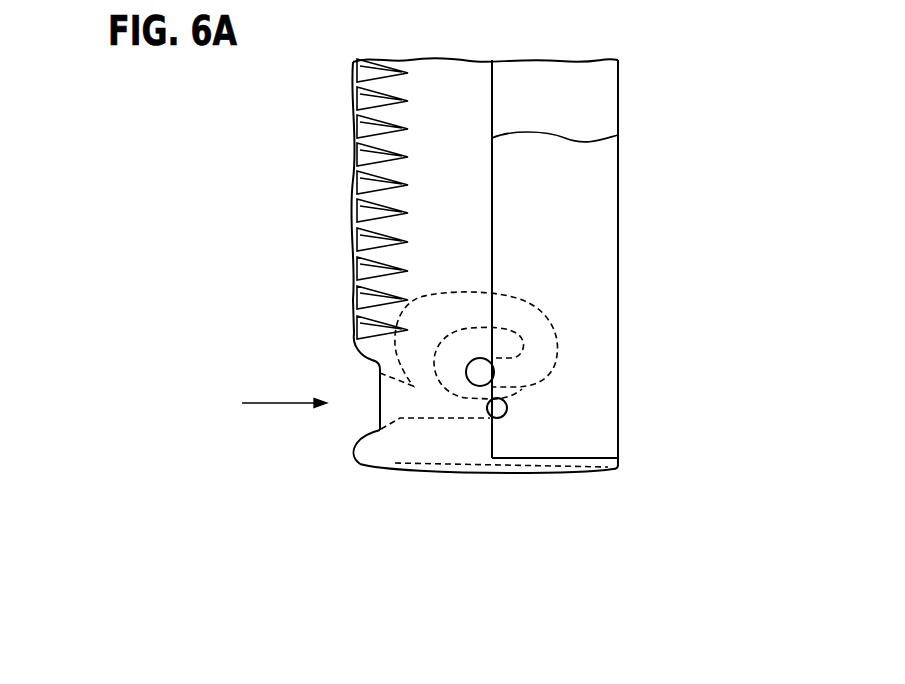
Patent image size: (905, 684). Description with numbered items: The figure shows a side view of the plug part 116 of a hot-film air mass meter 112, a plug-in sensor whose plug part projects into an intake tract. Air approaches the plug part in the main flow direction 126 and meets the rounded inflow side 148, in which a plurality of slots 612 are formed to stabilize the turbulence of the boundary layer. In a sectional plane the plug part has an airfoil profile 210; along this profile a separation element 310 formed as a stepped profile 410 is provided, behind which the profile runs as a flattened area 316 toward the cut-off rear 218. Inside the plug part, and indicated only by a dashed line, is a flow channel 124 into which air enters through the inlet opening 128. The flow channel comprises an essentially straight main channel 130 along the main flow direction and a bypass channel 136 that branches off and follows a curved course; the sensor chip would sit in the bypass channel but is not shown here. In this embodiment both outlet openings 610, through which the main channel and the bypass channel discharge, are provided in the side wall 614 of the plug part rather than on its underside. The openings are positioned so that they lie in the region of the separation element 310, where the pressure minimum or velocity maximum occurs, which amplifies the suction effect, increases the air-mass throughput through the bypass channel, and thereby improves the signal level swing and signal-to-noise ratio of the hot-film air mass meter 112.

The hot-film air mass meter 112 is at (365, 198).
The plug part 116 is at (365, 198).
The flow channel 124 is at (540, 421).
The main flow direction 126 is at (275, 402).
The inlet opening 128 is at (371, 411).
The main channel 130 is at (483, 497).
The bypass channel 136 is at (553, 336).
The inflow side 148 is at (304, 199).
The airfoil profile 210 is at (502, 483).
The rear 218 is at (634, 441).
The separation element 310 is at (609, 131).
The stepped profile 410 is at (618, 135).
The flattened area 316 is at (622, 291).
The outlet openings 610 is at (480, 372).
The slots 612 is at (355, 126).
The side wall 614 is at (570, 440).